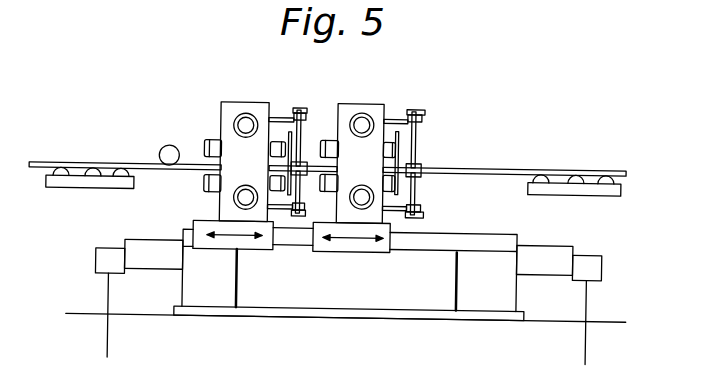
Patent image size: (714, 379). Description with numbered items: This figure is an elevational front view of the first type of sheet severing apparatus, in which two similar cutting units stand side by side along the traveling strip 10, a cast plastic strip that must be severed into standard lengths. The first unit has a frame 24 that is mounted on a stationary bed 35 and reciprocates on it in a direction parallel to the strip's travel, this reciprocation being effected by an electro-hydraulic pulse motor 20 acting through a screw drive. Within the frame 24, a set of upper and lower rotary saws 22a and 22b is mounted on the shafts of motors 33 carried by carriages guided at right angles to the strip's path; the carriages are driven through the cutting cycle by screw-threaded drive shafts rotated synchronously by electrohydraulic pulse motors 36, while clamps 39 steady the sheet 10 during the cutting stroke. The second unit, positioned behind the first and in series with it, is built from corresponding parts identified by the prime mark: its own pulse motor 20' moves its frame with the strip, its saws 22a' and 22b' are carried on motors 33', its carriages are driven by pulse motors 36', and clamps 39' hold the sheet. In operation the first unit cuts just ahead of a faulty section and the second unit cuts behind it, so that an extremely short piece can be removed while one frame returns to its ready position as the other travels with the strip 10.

The strip 10 is at (106, 166).
The electro-hydraulic pulse motor 20 is at (117, 298).
The electro-hydraulic pulse motor 20' is at (580, 306).
The upper rotary saw 22a is at (300, 124).
The upper rotary saw 22a' is at (432, 139).
The lower rotary saw 22b is at (275, 239).
The lower rotary saw 22b' is at (431, 195).
The frame 24 is at (229, 104).
The motors 33 is at (231, 160).
The motors 33' is at (344, 176).
The stationary bed 35 is at (367, 299).
The electrohydraulic pulse motors 36 is at (238, 169).
The electrohydraulic pulse motors 36' is at (382, 183).
The clamps 39 is at (325, 126).
The clamps 39' is at (433, 164).